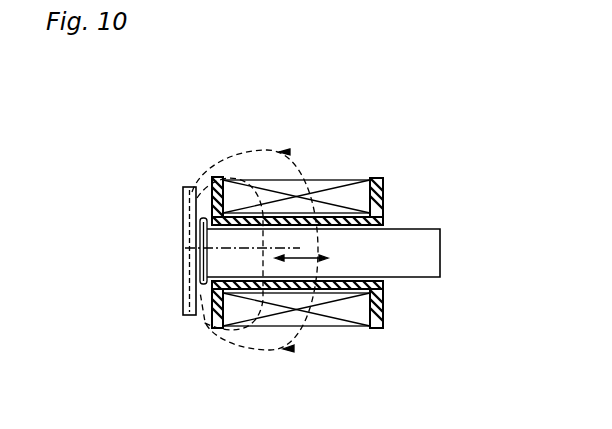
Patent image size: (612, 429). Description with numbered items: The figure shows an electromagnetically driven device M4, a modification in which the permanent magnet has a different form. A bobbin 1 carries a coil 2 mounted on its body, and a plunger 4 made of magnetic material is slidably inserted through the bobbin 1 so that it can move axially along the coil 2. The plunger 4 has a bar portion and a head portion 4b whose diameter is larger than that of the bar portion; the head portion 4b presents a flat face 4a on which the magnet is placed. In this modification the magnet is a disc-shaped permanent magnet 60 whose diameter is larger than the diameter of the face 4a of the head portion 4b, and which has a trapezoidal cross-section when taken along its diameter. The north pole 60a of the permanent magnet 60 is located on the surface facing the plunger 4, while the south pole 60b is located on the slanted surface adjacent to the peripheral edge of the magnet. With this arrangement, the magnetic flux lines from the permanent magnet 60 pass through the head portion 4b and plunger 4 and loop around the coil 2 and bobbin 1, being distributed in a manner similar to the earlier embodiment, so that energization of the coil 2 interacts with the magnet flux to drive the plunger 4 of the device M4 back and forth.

The bobbin 1 is at (385, 197).
The coil 2 is at (360, 174).
The plunger 4 is at (422, 238).
The flat surface 4a is at (202, 293).
The head portion 4b is at (198, 190).
The permanent magnet 60 is at (182, 233).
The north pole 60a is at (188, 270).
The south pole 60b is at (190, 310).
The electromagnetically driven device M4 is at (332, 162).